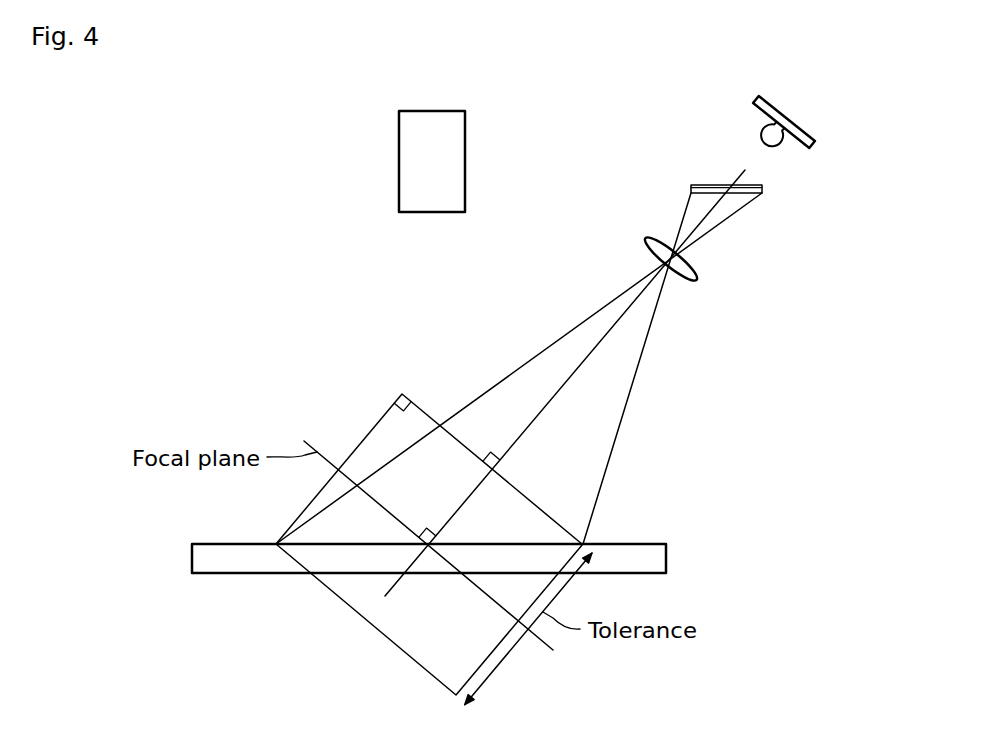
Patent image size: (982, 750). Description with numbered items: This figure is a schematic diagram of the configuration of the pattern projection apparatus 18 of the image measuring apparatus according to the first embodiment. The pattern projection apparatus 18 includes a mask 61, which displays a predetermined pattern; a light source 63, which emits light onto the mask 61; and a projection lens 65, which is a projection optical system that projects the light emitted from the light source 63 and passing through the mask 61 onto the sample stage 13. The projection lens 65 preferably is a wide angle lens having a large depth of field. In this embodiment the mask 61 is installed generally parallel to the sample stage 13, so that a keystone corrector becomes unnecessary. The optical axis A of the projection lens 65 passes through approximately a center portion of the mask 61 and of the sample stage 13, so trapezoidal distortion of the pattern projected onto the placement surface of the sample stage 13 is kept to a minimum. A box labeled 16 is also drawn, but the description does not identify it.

The sample stage 13 is at (192, 562).
The processing head 16 is at (399, 160).
The pattern projection apparatus 18 is at (764, 265).
The mask 61 is at (710, 184).
The light source 63 is at (813, 147).
The projection lens 65 is at (650, 240).
The optical axis A is at (592, 352).